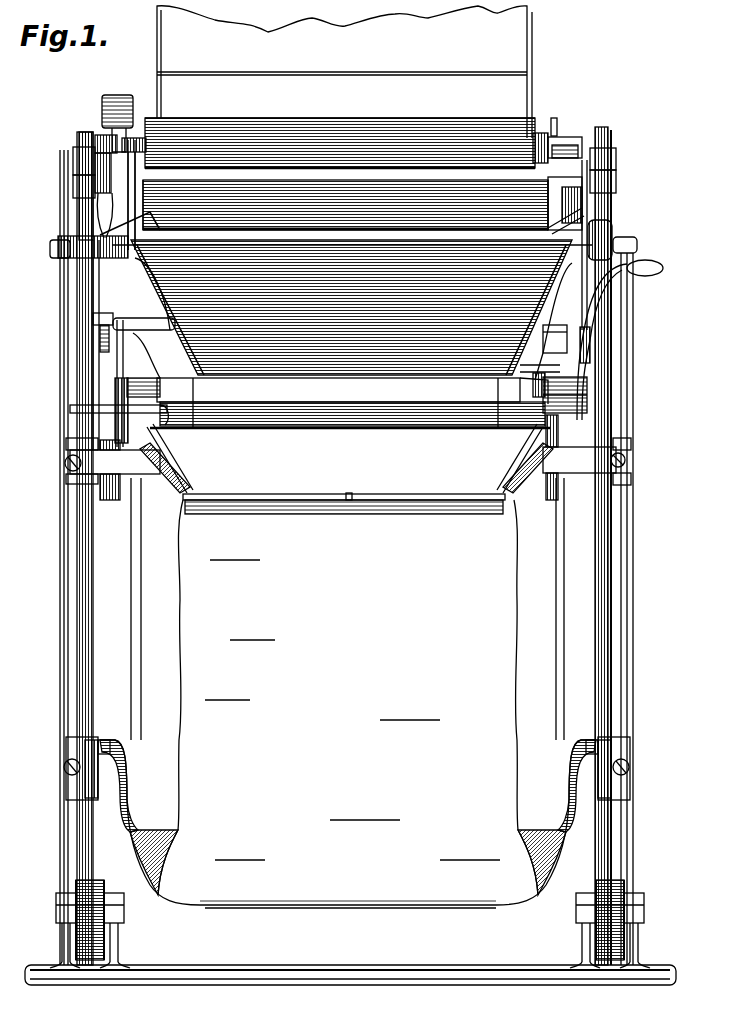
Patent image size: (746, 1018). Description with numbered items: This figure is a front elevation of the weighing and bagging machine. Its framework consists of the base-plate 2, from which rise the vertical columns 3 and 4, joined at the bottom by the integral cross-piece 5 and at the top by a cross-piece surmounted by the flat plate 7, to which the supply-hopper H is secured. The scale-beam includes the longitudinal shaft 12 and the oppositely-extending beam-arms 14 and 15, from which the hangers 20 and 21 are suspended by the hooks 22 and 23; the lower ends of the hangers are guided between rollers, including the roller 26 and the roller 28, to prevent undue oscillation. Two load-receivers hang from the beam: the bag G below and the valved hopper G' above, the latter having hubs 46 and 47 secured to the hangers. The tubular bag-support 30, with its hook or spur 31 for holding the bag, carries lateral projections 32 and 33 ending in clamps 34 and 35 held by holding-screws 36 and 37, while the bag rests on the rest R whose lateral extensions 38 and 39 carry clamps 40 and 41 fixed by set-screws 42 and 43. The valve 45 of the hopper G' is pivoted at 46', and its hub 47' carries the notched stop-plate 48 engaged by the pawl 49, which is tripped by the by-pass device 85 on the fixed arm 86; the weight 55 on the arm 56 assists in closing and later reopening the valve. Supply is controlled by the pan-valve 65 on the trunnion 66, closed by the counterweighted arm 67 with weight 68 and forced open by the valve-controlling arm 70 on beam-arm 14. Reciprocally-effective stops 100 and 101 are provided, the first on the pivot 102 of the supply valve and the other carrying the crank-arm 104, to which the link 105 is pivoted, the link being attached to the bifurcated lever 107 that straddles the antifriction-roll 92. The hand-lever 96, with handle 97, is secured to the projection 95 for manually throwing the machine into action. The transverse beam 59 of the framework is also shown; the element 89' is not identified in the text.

The supply-hopper H is at (344, 72).
The pan-valve 65 is at (352, 178).
The crank-arm 104 is at (573, 173).
The rod 89' is at (155, 195).
The valved hopper G' is at (352, 307).
The valve 45 is at (353, 397).
The bag-support 30 is at (327, 478).
The hook or spur 31 is at (352, 497).
The transverse beam 59 is at (148, 424).
The lateral projection 33 is at (551, 465).
The bag G is at (348, 702).
The rest R is at (345, 906).
The vertical column 3 is at (62, 610).
The hanger 20 is at (86, 580).
The vertical column 4 is at (628, 618).
The hanger 21 is at (606, 607).
The holding-screw 36 is at (66, 462).
The clamp 34 is at (78, 480).
The lateral projection 32 is at (112, 474).
The holding-screw 37 is at (624, 458).
The clamp 35 is at (620, 477).
The antifriction-roll 92 is at (580, 410).
The set-screw 42 is at (66, 764).
The clamp 40 is at (80, 792).
The lateral extension 38 is at (110, 777).
The set-screw 43 is at (628, 762).
The clamp 41 is at (622, 790).
The lateral extension 39 is at (574, 778).
The roller 26 is at (82, 886).
The roller 28 is at (615, 890).
The base-plate 2 is at (223, 976).
The cross-piece 5 is at (453, 957).
The weight 68 is at (116, 98).
The counterweighted arm 67 is at (118, 133).
The pivot or trunnion 66 is at (157, 132).
The longitudinal shaft 12 is at (102, 142).
The valve-controlling arm 70 is at (112, 162).
The hook 22 is at (90, 180).
The beam-arm 14 is at (78, 186).
The flat plate 7 is at (50, 250).
The hub 46 is at (89, 242).
The by-pass device 85 is at (93, 321).
The pin 86 is at (100, 340).
The pawl 49 is at (122, 360).
The hub 47' is at (169, 360).
The pivot 46' is at (93, 391).
The notched stop-plate 48 is at (118, 422).
The pivot 102 is at (529, 130).
The stop 101 is at (556, 120).
The stop 100 is at (560, 132).
The hook 23 is at (606, 173).
The beam-arm 15 is at (602, 190).
The link 105 is at (586, 214).
The hub 47 is at (621, 236).
The handle 97 is at (664, 266).
The hand-lever 96 is at (602, 300).
The bifurcated lever 107 is at (592, 343).
The closing device or weight 55 is at (546, 337).
The arm 56 is at (556, 360).
The projection 95 is at (533, 393).